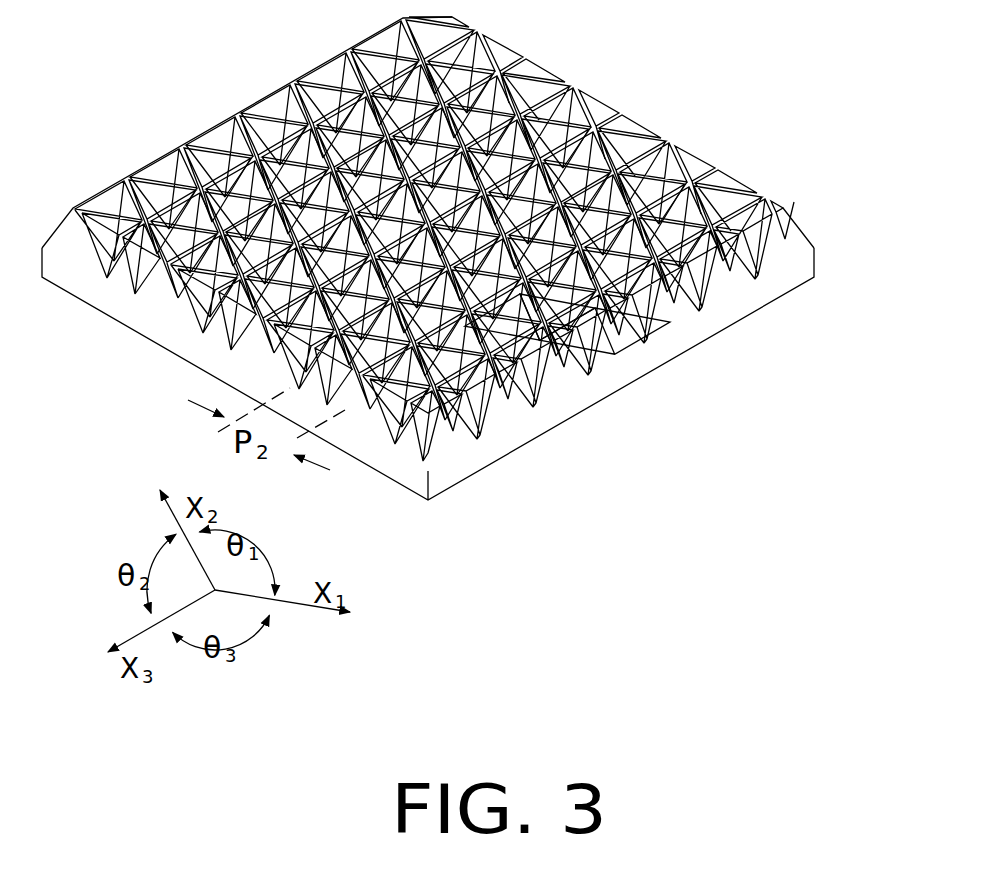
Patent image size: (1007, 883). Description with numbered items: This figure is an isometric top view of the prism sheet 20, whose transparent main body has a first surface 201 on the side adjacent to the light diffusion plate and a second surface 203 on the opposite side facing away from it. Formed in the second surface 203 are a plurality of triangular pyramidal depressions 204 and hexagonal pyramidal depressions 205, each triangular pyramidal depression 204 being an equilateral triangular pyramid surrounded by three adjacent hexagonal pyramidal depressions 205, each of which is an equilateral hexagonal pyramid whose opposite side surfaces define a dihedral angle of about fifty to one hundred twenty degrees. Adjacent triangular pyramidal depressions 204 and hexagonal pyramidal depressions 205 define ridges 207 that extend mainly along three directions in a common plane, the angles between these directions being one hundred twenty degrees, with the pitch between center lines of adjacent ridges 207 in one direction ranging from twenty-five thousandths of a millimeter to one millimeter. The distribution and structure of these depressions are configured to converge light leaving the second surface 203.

The prism sheet 20 is at (461, 279).
The first surface 201 is at (744, 330).
The second surface 203 is at (776, 212).
The triangular pyramidal depression 204 is at (570, 343).
The hexagonal pyramidal depression 205 is at (518, 340).
The ridge 207 is at (563, 350).